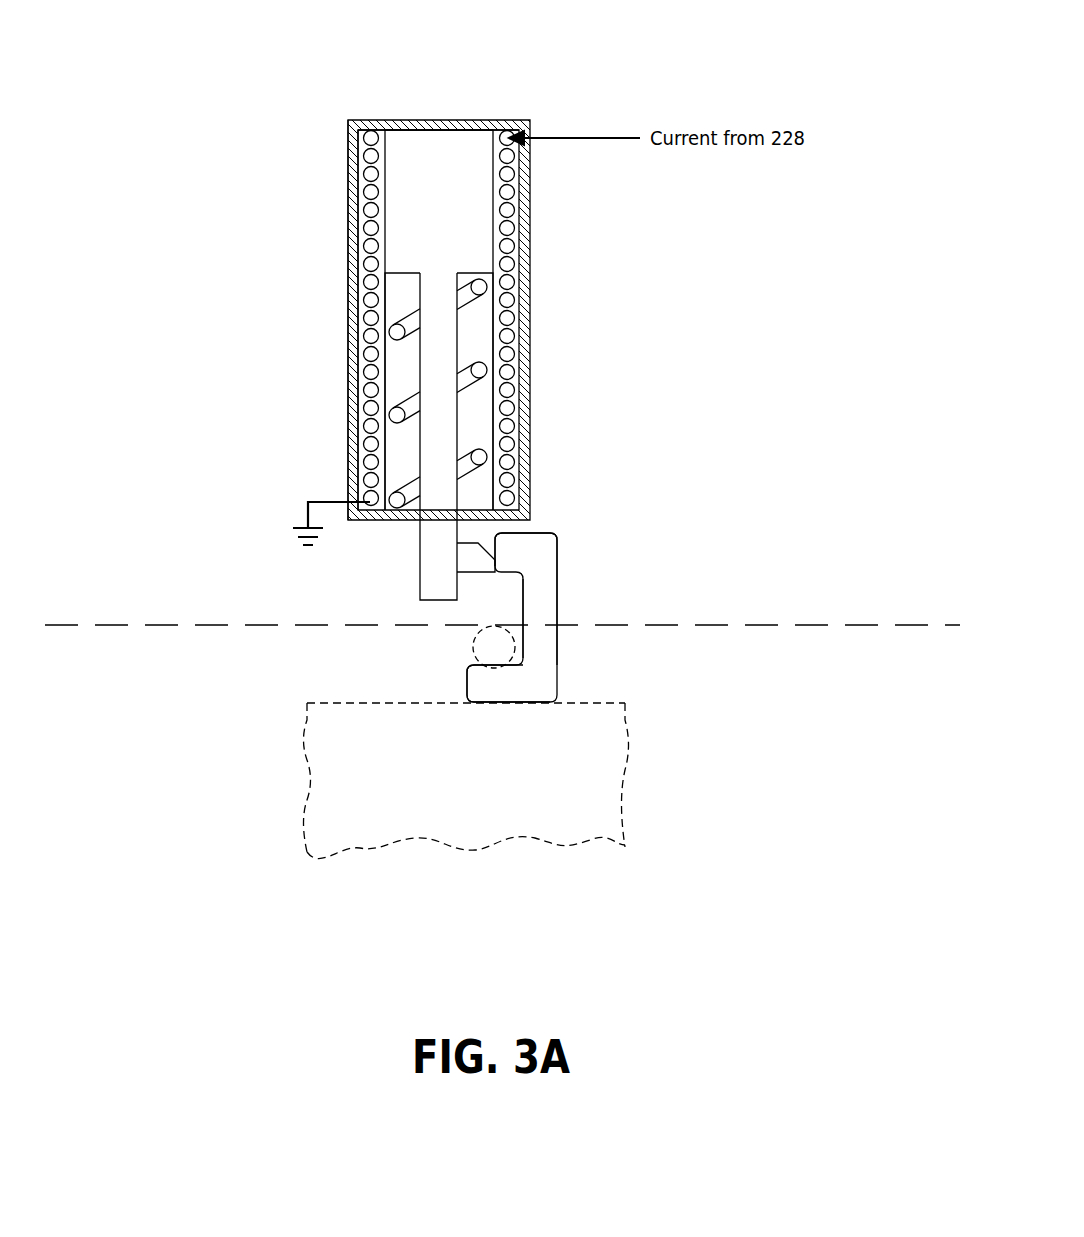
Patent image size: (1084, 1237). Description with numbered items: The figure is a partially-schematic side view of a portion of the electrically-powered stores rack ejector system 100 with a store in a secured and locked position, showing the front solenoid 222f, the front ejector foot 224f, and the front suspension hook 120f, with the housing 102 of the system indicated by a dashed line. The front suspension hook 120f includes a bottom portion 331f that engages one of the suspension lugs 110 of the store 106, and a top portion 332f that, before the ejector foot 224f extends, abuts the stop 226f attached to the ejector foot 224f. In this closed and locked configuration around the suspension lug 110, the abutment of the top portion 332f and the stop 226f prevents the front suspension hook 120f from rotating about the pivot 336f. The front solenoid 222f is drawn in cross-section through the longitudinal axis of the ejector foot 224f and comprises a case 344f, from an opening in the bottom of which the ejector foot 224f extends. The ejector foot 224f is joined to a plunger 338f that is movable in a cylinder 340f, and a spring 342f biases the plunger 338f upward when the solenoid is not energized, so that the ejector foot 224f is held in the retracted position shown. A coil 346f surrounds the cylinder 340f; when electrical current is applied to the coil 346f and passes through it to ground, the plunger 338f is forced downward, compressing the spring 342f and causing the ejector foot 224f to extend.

The electrically-powered stores rack ejector system 100 is at (283, 106).
The housing 102 is at (808, 628).
The store 106 is at (528, 842).
The suspension lug 110 is at (494, 647).
The front suspension hook 120f is at (557, 566).
The front solenoid 222f is at (350, 312).
The front ejector foot 224f is at (417, 552).
The stop 226f is at (477, 573).
The bottom portion 331f is at (488, 683).
The top portion 332f is at (527, 553).
The pivot 336f is at (537, 598).
The plunger 338f is at (430, 220).
The cylinder 340f is at (362, 120).
The spring 342f is at (475, 455).
The case 344f is at (530, 295).
The coil 346f is at (506, 230).